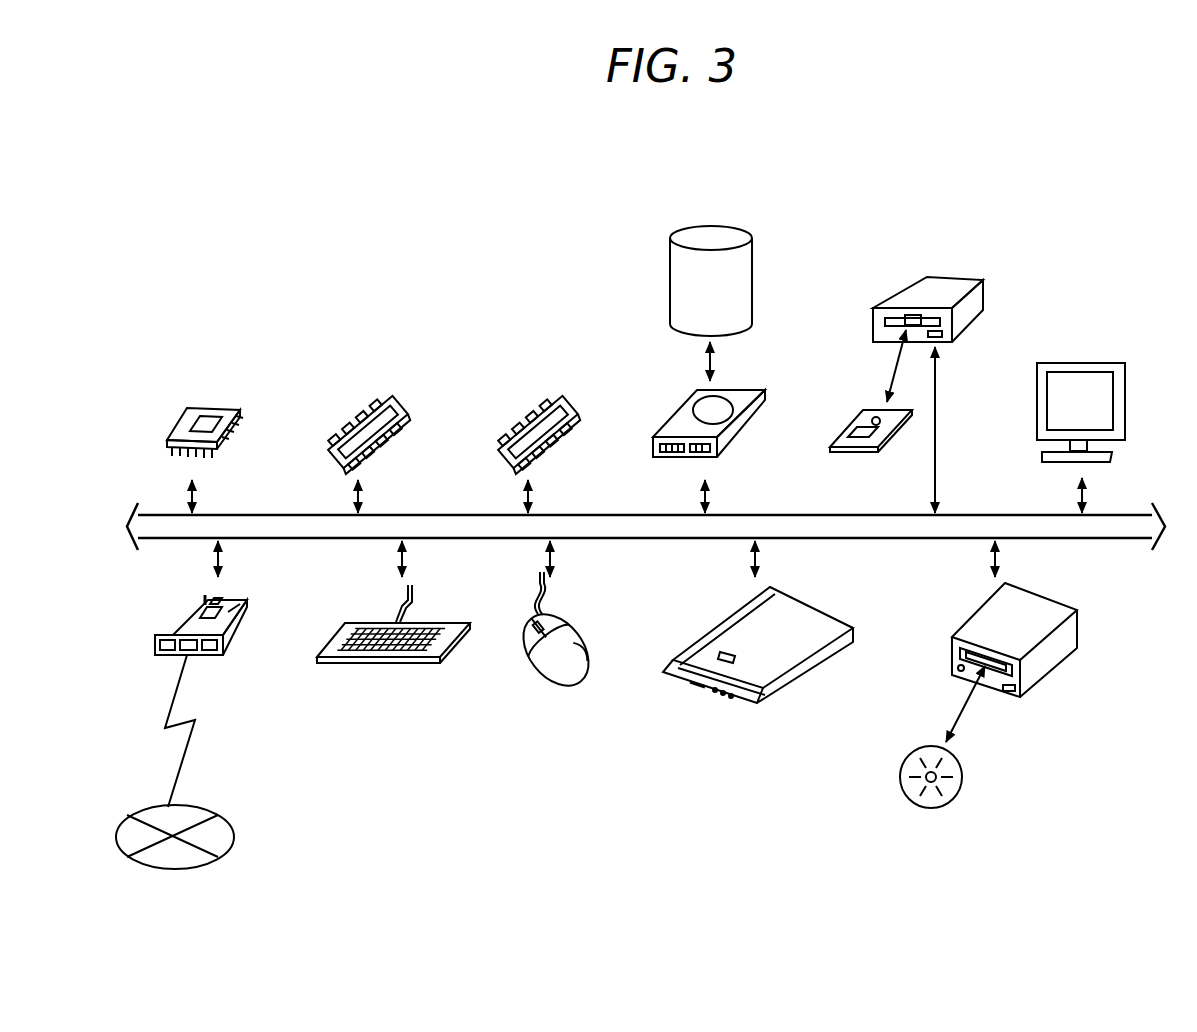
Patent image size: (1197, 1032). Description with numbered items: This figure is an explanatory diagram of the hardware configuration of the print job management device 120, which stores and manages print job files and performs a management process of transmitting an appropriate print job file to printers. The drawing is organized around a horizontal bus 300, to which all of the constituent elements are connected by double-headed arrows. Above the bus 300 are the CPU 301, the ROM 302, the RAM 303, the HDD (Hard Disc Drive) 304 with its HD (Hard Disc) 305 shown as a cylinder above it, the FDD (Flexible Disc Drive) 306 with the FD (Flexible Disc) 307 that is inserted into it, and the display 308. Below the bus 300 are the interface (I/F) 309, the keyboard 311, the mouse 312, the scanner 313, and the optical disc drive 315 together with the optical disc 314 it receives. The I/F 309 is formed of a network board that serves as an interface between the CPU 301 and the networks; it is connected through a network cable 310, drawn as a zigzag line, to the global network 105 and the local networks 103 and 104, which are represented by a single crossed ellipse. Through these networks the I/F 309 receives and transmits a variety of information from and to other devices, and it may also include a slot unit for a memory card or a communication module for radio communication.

The print job management device 120 is at (557, 236).
The bus 300 is at (1143, 513).
The CPU 301 is at (216, 403).
The ROM 302 is at (393, 404).
The RAM 303 is at (561, 404).
The HDD (Hard Disc Drive) 304 is at (731, 390).
The HD (Hard Disc) 305 is at (713, 229).
The FDD (Flexible Disc Drive) 306 is at (906, 277).
The FD (Flexible Disc) 307 is at (856, 452).
The display 308 is at (1072, 363).
The interface (I/F) 309 is at (218, 656).
The network cable 310 is at (183, 769).
The global network 105 is at (262, 837).
The local network 103 is at (175, 837).
The local network 104 is at (234, 836).
The keyboard 311 is at (374, 664).
The mouse 312 is at (551, 692).
The scanner 313 is at (736, 715).
The optical disc 314 is at (943, 812).
The optical disc drive 315 is at (1060, 667).